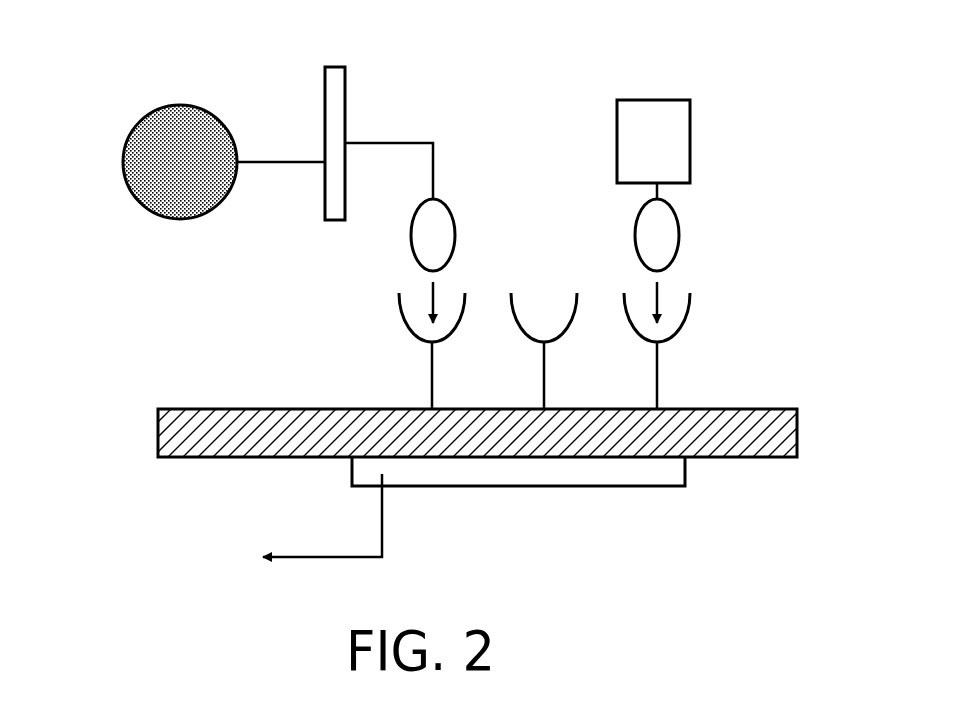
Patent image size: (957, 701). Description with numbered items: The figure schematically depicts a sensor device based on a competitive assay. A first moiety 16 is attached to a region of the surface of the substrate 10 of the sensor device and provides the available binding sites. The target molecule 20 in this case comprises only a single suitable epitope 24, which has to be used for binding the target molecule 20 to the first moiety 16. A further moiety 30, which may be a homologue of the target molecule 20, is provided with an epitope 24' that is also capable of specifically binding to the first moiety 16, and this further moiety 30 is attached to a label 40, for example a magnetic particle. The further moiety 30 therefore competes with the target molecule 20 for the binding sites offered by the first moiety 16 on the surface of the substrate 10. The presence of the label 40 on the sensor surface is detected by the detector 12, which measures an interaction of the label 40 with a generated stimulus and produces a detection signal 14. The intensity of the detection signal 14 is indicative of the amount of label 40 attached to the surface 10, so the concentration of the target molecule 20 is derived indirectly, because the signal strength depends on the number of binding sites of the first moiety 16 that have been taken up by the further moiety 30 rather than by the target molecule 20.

The substrate surface 10 is at (759, 450).
The detector 12 is at (588, 478).
The detection signal 14 is at (382, 516).
The first moiety 16 is at (678, 324).
The target molecule 20 is at (690, 144).
The epitope 24 is at (696, 261).
The epitope 24' is at (472, 261).
The further moiety 30 is at (335, 220).
The label 40 is at (122, 162).